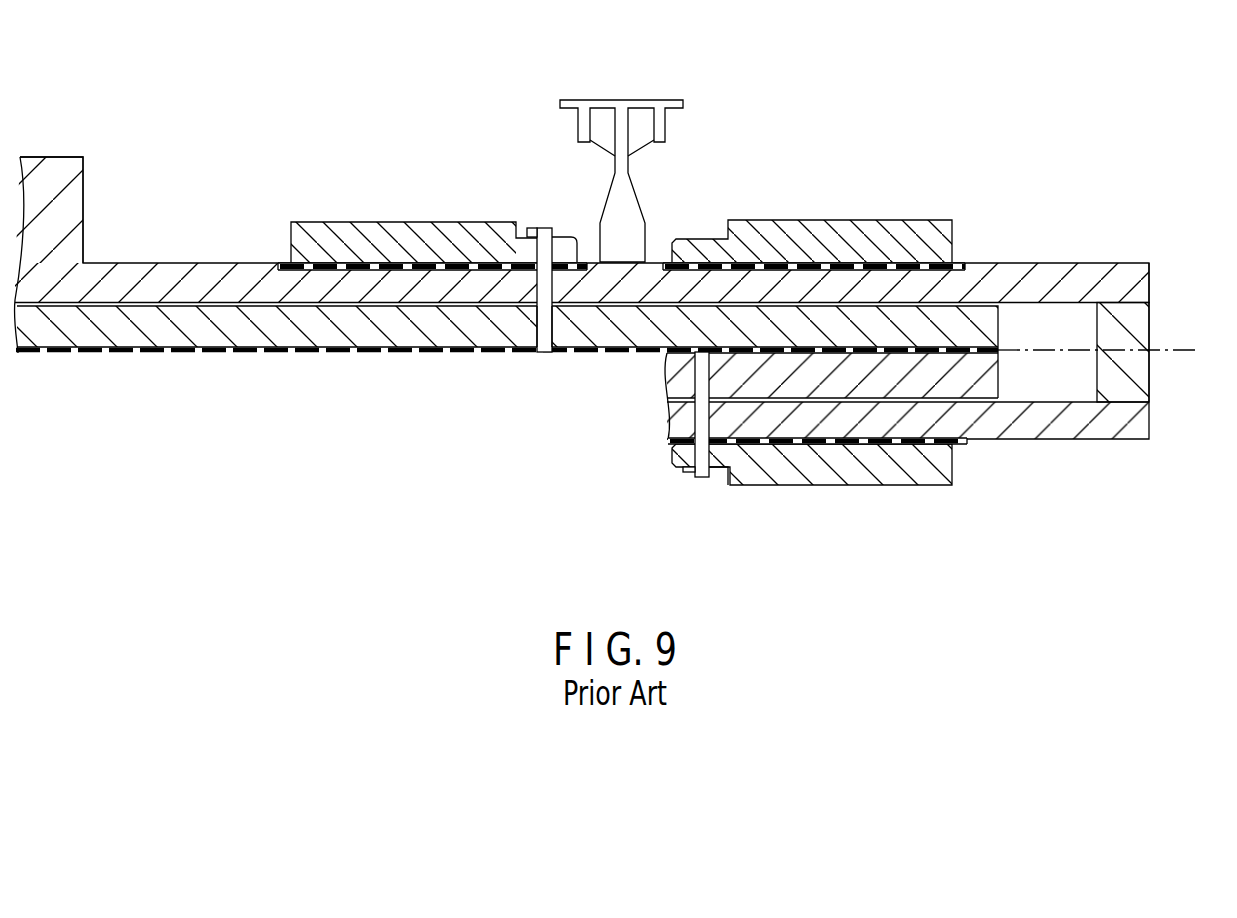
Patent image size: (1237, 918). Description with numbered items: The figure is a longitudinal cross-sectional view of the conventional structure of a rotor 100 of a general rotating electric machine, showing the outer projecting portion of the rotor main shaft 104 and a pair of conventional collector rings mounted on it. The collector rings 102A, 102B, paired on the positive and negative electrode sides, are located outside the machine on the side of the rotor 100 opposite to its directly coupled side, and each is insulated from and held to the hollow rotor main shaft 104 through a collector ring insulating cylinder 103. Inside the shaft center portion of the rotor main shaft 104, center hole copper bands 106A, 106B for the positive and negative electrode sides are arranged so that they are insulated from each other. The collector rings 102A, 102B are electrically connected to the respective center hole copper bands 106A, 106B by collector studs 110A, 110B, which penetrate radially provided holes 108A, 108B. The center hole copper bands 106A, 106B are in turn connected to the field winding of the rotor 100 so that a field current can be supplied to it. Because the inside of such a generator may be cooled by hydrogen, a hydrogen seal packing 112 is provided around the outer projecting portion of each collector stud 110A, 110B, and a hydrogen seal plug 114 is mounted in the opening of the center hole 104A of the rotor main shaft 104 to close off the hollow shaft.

The rotor 100 is at (84, 133).
The collector ring 102A is at (405, 212).
The collector ring 102B is at (852, 208).
The collector ring insulating cylinder 103 is at (285, 264).
The rotor main shaft 104 is at (203, 264).
The center hole 104A is at (1065, 388).
The center hole copper band 106A is at (757, 327).
The center hole copper band 106B is at (987, 378).
The hole 108A is at (537, 329).
The hole 108B is at (697, 425).
The collector stud 110A is at (543, 228).
The collector stud 110B is at (702, 478).
The hydrogen seal packing 112 is at (533, 228).
The hydrogen seal plug 114 is at (1140, 327).